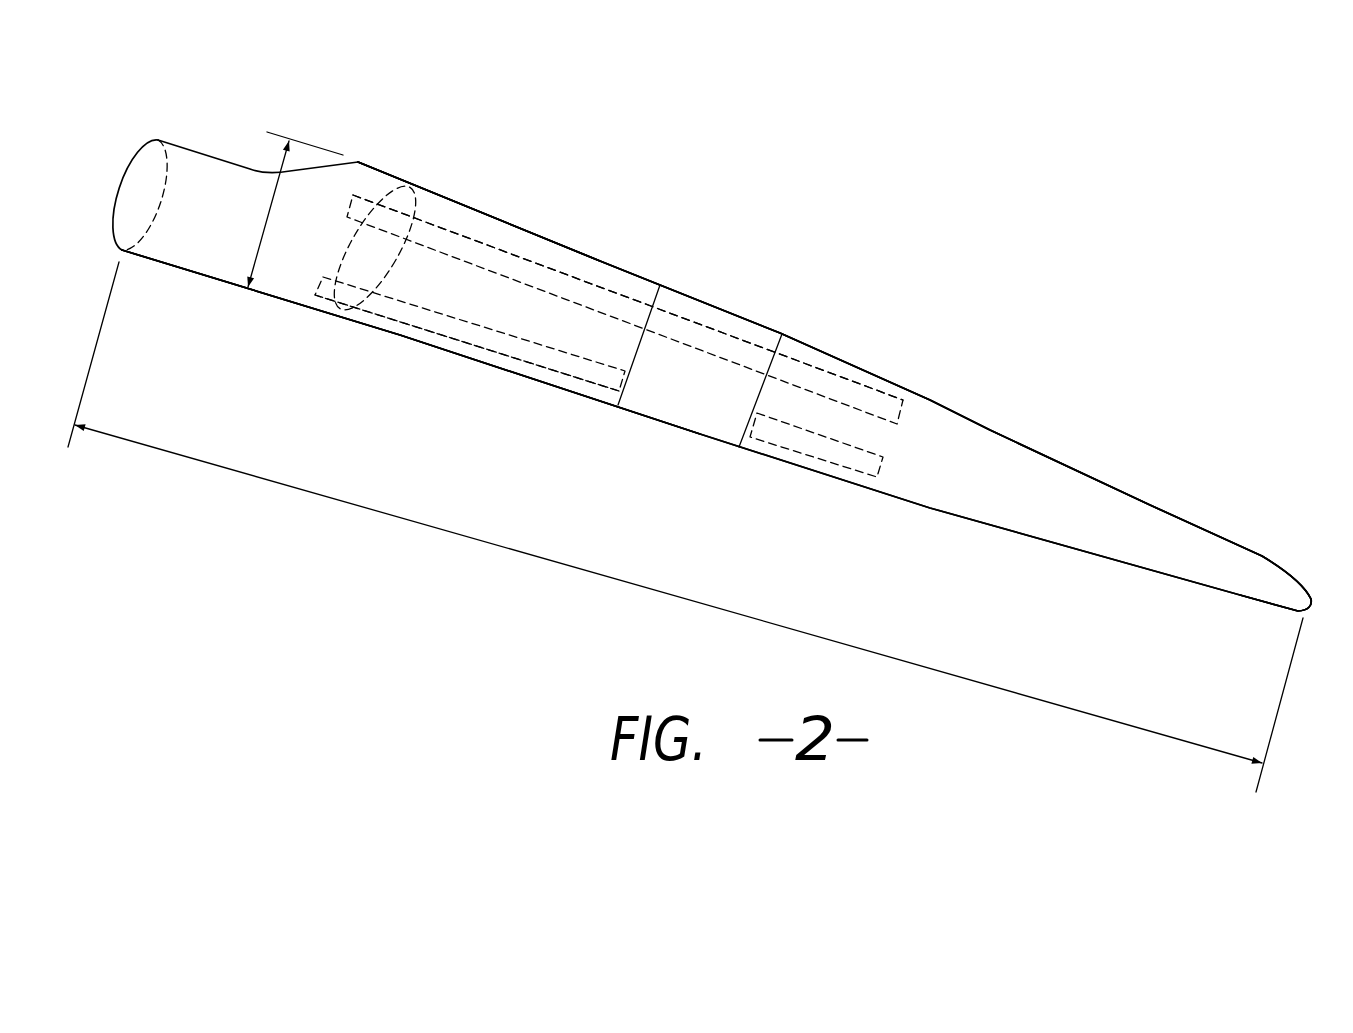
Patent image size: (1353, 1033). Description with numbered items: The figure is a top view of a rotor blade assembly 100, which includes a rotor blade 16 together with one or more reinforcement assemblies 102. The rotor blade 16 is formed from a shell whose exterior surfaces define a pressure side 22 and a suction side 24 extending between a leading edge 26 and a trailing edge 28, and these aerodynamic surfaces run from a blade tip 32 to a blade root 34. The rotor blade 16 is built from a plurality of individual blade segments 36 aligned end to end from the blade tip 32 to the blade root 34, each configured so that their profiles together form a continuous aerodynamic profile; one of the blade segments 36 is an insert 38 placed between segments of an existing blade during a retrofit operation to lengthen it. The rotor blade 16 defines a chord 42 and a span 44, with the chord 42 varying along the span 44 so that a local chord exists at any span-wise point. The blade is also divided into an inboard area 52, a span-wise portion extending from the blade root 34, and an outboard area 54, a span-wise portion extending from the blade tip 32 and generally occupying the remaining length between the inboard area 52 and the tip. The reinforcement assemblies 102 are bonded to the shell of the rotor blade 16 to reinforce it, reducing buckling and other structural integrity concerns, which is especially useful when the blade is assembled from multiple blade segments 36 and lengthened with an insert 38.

The rotor blade 16 is at (672, 268).
The pressure side 22 is at (435, 220).
The suction side 24 is at (373, 188).
The leading edge 26 is at (423, 344).
The trailing edge 28 is at (498, 220).
The blade tip 32 is at (1313, 601).
The blade root 34 is at (123, 173).
The blade segments 36 is at (547, 207).
The insert 38 is at (757, 293).
The chord 42 is at (270, 200).
The span 44 is at (490, 544).
The inboard area 52 is at (497, 300).
The outboard area 54 is at (930, 435).
The rotor blade assembly 100 is at (927, 237).
The reinforcement assembly 102 is at (610, 282).